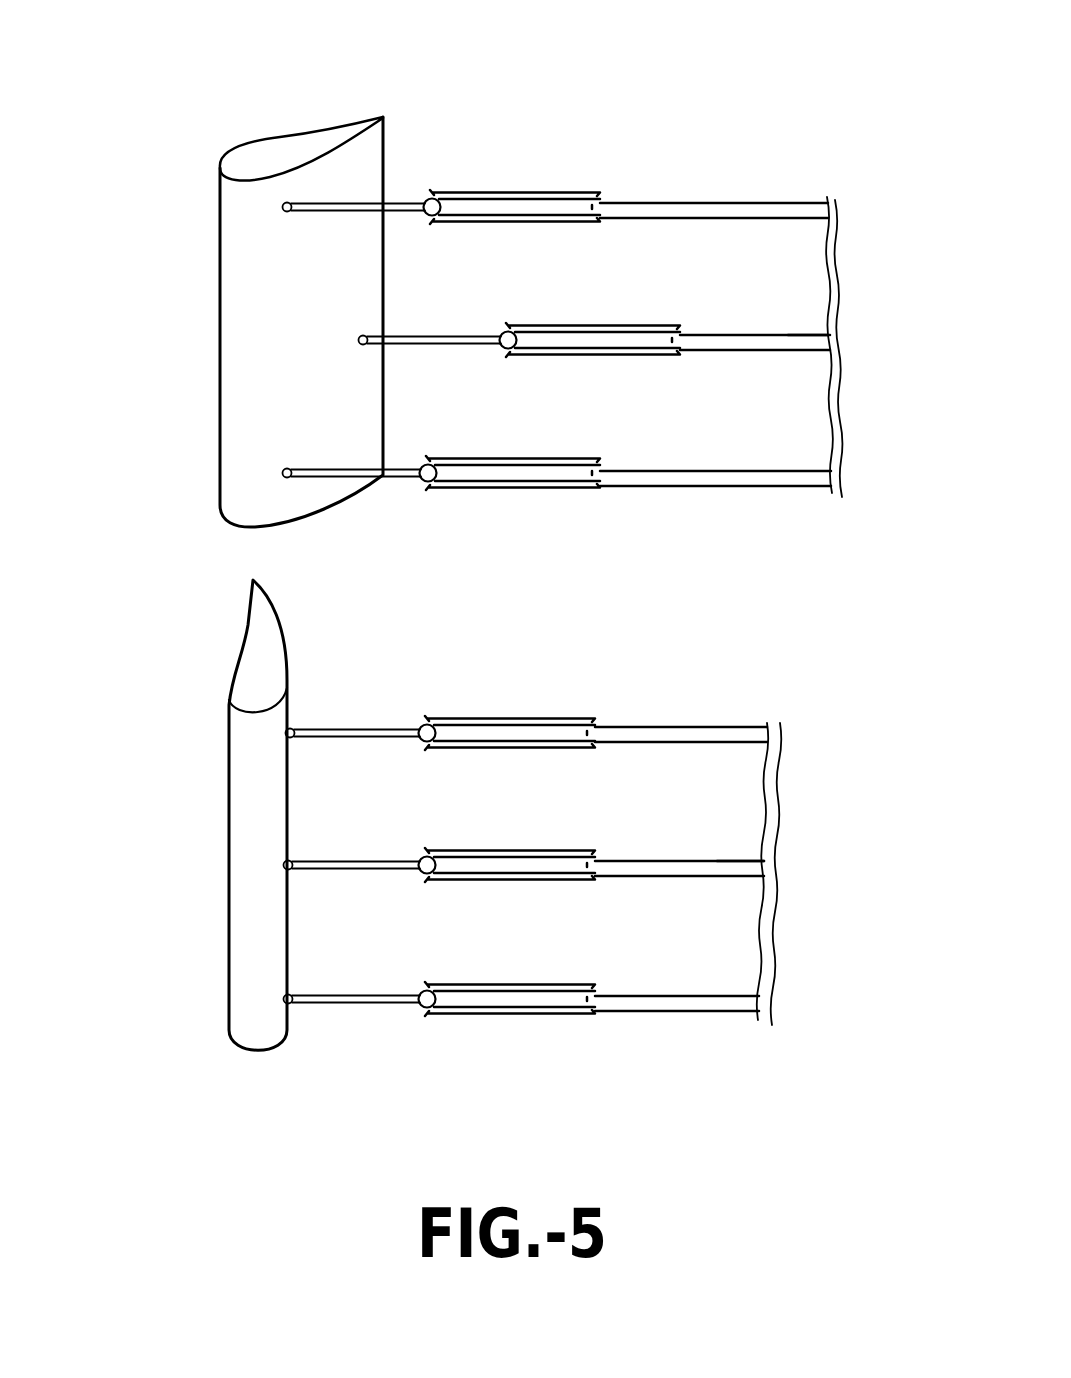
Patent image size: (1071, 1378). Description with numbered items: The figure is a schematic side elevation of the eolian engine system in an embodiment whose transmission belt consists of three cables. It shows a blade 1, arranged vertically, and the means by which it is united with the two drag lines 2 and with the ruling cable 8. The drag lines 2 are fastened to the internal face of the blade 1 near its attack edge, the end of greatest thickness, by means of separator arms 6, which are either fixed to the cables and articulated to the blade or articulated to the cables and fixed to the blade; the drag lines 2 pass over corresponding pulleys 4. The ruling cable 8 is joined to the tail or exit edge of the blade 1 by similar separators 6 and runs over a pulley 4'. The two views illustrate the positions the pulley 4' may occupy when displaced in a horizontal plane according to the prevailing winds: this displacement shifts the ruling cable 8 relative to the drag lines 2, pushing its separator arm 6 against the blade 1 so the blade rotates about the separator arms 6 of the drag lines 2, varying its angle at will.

The blade 1 is at (273, 227).
The drag lines 2 is at (743, 203).
The pulleys 4 is at (512, 575).
The pulley 4' is at (571, 575).
The separator arms 6 is at (408, 195).
The ruling cable 8 is at (788, 335).